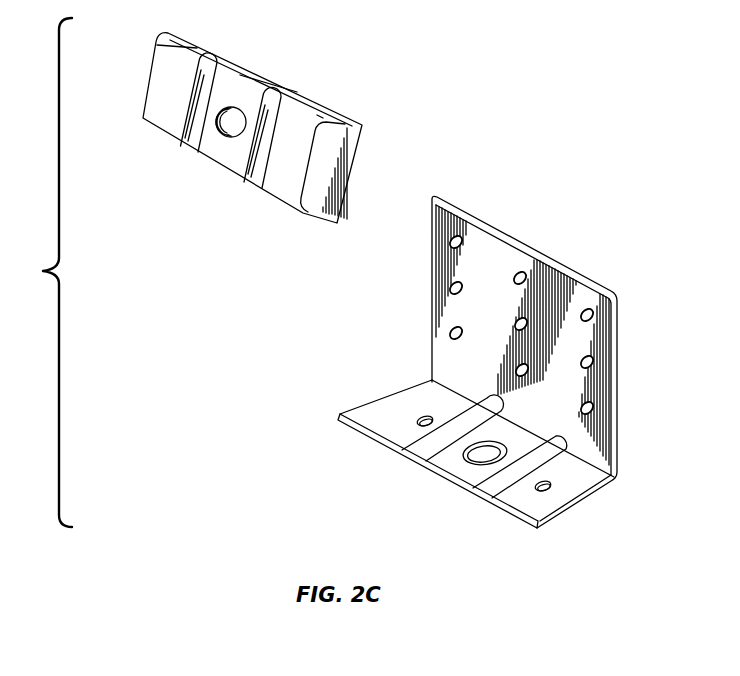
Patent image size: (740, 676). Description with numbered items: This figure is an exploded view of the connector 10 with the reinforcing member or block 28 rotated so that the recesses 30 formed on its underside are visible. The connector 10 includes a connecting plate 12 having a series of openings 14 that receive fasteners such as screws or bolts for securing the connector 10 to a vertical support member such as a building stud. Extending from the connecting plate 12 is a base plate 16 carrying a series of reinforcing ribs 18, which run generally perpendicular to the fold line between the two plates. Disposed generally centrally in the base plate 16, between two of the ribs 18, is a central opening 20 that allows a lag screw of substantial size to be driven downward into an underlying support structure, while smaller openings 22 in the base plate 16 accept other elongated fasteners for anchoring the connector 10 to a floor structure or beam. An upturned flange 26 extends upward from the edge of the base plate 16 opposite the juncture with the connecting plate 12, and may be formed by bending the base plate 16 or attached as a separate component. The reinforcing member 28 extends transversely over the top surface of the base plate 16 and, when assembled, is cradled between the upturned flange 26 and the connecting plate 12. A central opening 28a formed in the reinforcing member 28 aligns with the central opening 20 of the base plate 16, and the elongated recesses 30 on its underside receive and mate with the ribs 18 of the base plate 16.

The connector 10 is at (381, 280).
The connecting plate 12 is at (481, 376).
The openings 14 is at (590, 314).
The base plate 16 is at (478, 448).
The reinforcing ribs 18 is at (425, 448).
The central opening 20 is at (479, 441).
The openings 22 is at (425, 417).
The upturned flange 26 is at (340, 422).
The reinforcing member 28 is at (247, 128).
The central opening 28a is at (230, 134).
The recesses 30 is at (195, 118).